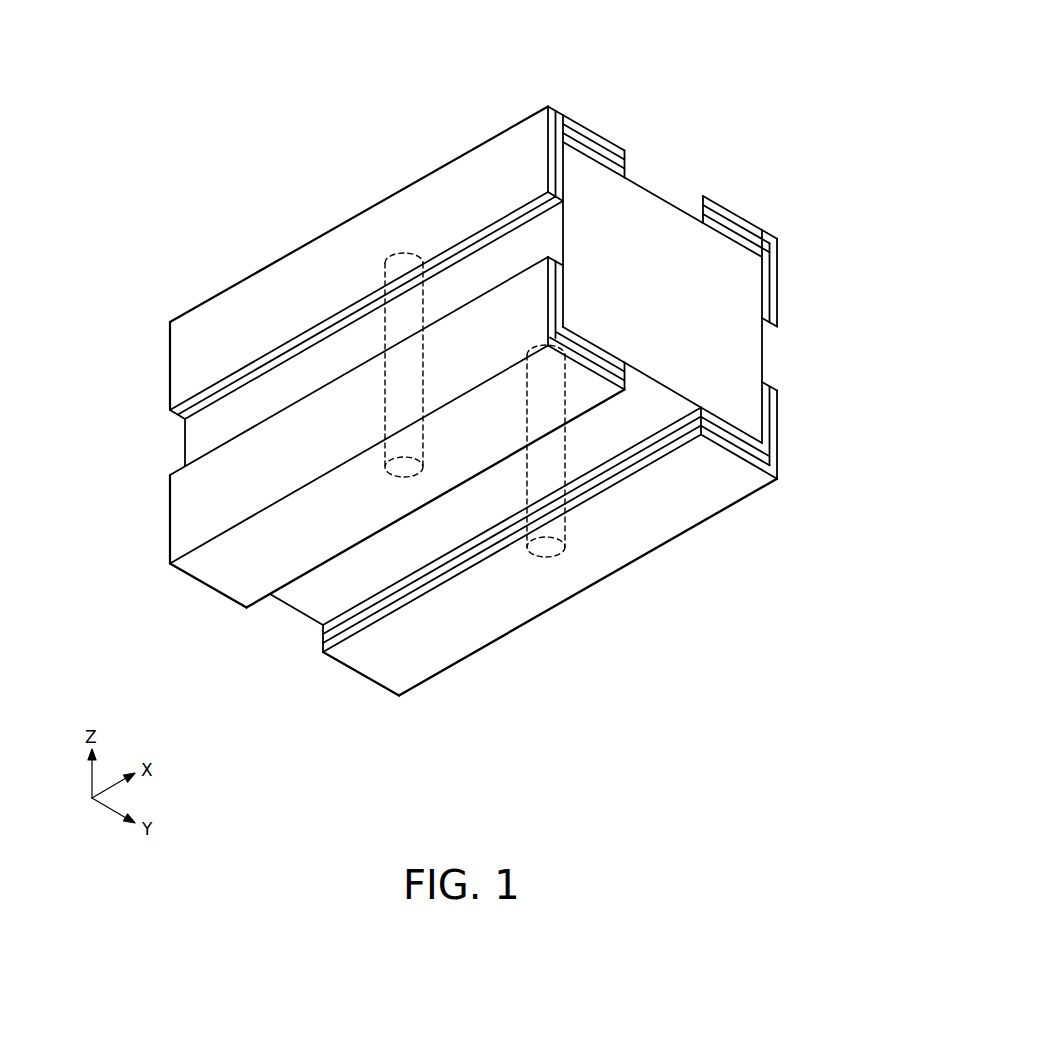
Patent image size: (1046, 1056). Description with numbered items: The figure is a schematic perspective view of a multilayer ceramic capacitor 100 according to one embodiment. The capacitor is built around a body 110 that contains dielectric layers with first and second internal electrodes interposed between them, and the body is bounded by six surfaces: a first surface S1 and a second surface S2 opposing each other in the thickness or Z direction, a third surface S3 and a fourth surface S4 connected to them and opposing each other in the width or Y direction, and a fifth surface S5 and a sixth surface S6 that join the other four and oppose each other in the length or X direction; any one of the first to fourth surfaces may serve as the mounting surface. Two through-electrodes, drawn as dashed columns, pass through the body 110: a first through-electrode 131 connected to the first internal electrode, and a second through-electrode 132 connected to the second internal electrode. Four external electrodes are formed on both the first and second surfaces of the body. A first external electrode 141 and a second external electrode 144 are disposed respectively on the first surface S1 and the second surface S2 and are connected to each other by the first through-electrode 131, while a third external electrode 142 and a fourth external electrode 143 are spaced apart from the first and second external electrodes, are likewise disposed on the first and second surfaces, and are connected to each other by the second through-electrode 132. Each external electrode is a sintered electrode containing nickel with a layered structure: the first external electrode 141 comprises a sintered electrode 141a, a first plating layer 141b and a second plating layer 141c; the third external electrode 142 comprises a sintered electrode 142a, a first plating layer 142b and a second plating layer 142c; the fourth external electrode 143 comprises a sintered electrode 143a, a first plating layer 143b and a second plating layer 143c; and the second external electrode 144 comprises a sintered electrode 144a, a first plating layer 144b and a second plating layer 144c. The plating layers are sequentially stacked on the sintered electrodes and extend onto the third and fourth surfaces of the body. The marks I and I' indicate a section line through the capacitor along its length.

The multilayer ceramic capacitor 100 is at (278, 158).
The body 110 is at (293, 614).
The first through-electrode 131 is at (404, 472).
The second through-electrode 132 is at (547, 552).
The first external electrode 141 is at (478, 459).
The sintered electrode 141a is at (624, 366).
The first plating layer 141b is at (624, 376).
The second plating layer 141c is at (624, 388).
The third external electrode 142 is at (617, 539).
The sintered electrode 142a is at (763, 441).
The first plating layer 142b is at (770, 462).
The second plating layer 142c is at (777, 482).
The fourth external electrode 143 is at (807, 261).
The sintered electrode 143a is at (764, 275).
The first plating layer 143b is at (770, 256).
The second plating layer 143c is at (777, 240).
The second external electrode 144 is at (397, 216).
The sintered electrode 144a is at (563, 145).
The first plating layer 144b is at (555, 130).
The second plating layer 144c is at (548, 118).
The first surface S1 is at (317, 300).
The second surface S2 is at (377, 578).
The third surface S3 is at (262, 344).
The fourth surface S4 is at (711, 474).
The fifth surface S5 is at (250, 582).
The sixth surface S6 is at (648, 232).
The section line I-I' I is at (137, 440).
The section line I- I' is at (625, 135).